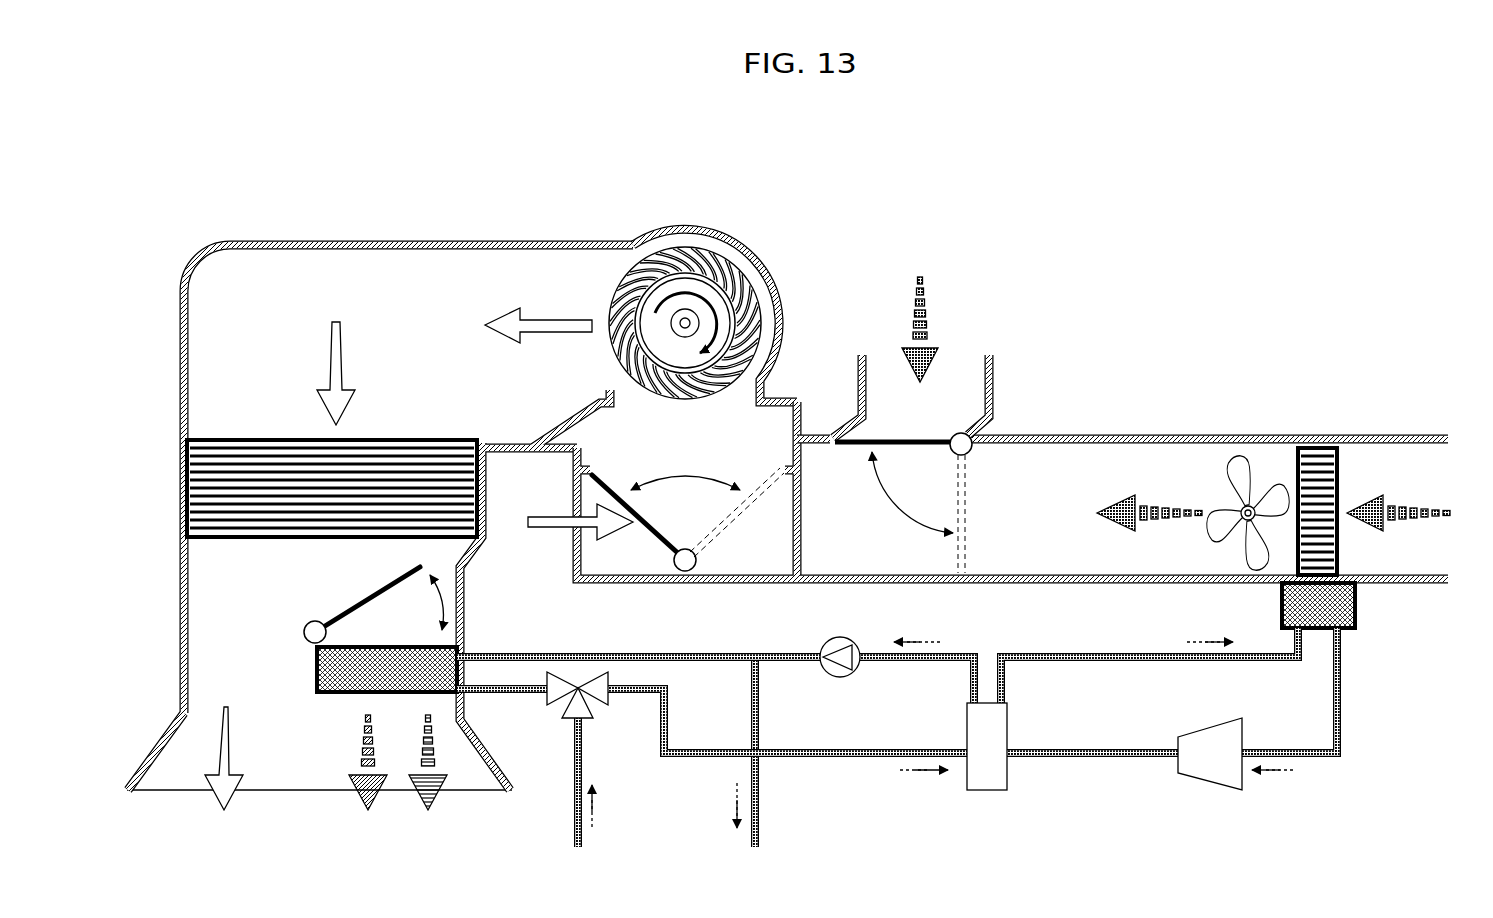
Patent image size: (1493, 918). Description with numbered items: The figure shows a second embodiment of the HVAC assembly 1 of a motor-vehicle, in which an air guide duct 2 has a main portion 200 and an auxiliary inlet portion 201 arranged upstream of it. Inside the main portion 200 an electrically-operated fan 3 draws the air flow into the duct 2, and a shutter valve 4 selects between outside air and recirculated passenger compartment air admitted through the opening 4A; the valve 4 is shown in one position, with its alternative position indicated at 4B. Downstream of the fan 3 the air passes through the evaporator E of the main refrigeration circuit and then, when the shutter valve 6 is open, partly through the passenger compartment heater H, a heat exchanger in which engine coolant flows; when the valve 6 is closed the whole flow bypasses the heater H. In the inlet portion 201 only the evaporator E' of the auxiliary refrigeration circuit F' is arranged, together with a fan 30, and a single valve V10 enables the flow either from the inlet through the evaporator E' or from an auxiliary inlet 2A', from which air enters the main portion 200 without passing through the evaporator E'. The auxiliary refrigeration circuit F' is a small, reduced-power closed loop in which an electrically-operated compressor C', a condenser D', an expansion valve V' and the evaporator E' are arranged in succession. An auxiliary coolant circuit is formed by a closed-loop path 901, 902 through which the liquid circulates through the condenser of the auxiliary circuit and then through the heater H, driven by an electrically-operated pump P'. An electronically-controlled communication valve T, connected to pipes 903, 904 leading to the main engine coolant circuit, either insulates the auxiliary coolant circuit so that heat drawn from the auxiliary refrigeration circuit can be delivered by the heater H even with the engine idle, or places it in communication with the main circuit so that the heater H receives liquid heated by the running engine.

The HVAC assembly 1 is at (170, 214).
The air guide duct 2 is at (386, 232).
The main portion 200 is at (670, 240).
The electrically-operated fan 3 is at (744, 266).
The auxiliary inlet 2A' is at (911, 357).
The single valve V10 is at (937, 437).
The auxiliary inlet portion 201 is at (1093, 421).
The axial fan 30 is at (1240, 470).
The evaporator E' is at (1359, 511).
The evaporator E is at (332, 526).
The shutter valve 6 is at (353, 616).
The shutter valve 4 is at (657, 540).
The damper second position 4B is at (778, 484).
The opening 4A is at (570, 552).
The passenger compartment heater H is at (343, 702).
The closed-loop path 901 is at (687, 652).
The electrically-operated pump P' is at (845, 633).
The expansion valve V' is at (1285, 605).
The auxiliary refrigeration circuit F' is at (1396, 752).
The closed-loop path 902 is at (807, 760).
The condenser D' is at (987, 776).
The compressor C' is at (1207, 779).
The inlet pipe 903 is at (570, 830).
The outlet pipe 904 is at (760, 830).
The communication valve T is at (610, 720).